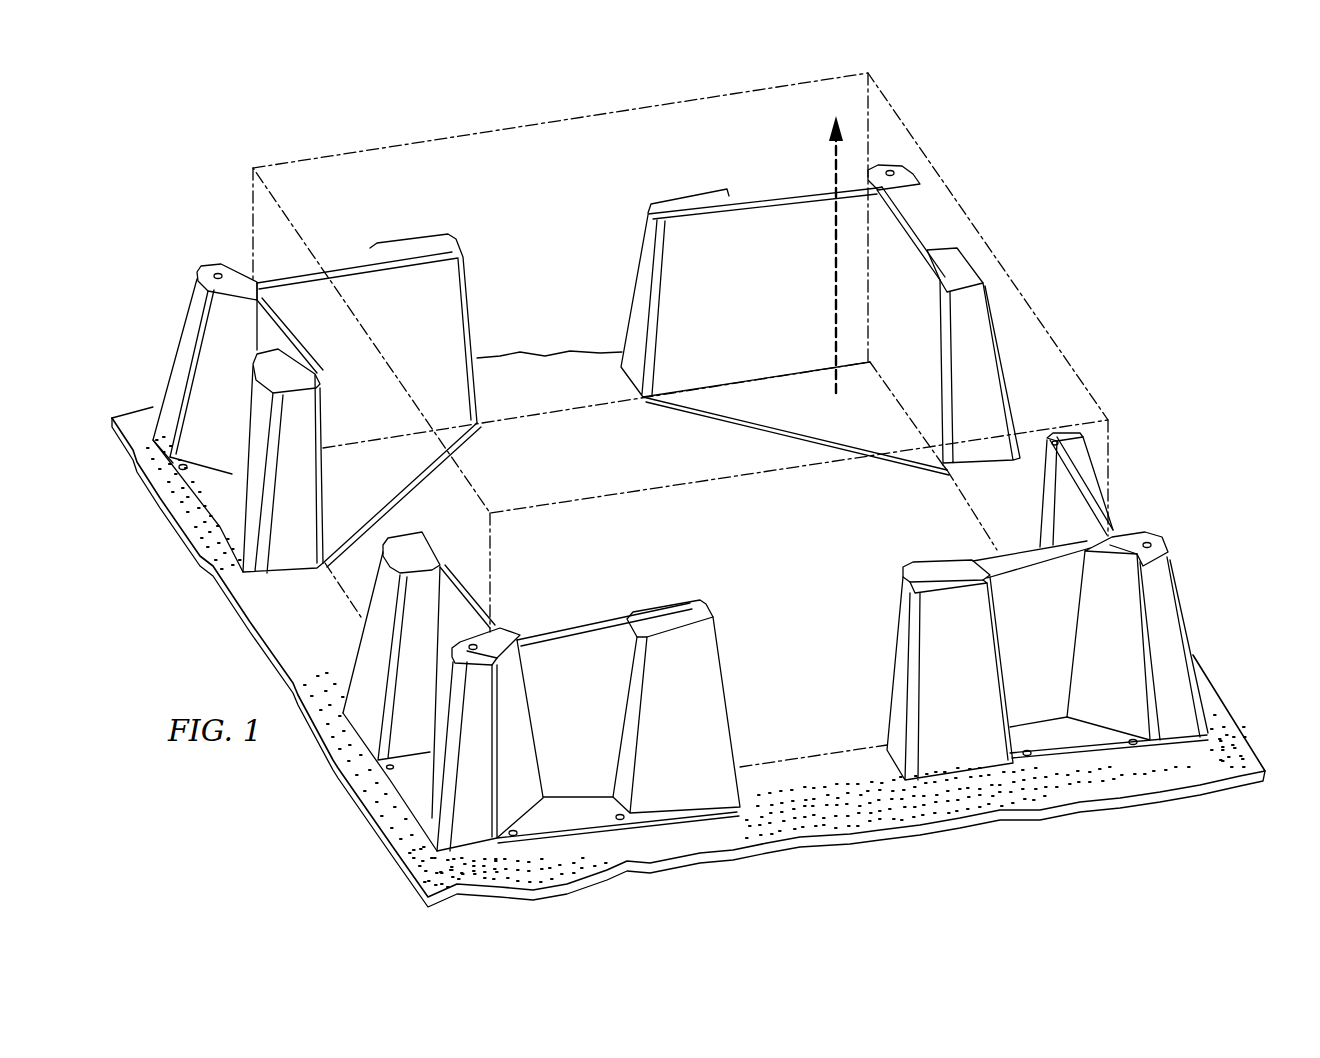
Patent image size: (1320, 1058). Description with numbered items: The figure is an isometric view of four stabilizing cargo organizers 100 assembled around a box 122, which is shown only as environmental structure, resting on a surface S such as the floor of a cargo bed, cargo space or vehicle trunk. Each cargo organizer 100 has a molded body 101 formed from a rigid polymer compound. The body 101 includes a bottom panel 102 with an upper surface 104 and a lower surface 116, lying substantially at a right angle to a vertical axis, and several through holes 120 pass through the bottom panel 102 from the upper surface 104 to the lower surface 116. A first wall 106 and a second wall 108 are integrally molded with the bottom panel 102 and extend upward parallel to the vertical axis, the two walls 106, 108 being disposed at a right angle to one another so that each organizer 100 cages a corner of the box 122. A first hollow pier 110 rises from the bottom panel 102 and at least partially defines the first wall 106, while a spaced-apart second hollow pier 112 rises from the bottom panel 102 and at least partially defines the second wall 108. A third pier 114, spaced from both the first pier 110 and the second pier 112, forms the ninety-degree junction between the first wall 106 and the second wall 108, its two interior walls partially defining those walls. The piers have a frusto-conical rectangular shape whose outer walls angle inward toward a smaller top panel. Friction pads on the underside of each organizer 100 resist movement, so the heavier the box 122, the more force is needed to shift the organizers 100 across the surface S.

The stabilizing cargo organizer 100 is at (709, 491).
The body 101 is at (890, 238).
The bottom panel 102 is at (856, 437).
The upper surface 104 is at (765, 614).
The first wall 106 is at (775, 300).
The second wall 108 is at (888, 318).
The first hollow pier 110 is at (632, 281).
The second hollow pier 112 is at (972, 368).
The third pier 114 is at (480, 718).
The lower surface 116 is at (735, 398).
The through holes 120 is at (527, 828).
The box 122 is at (405, 141).
The surface S is at (850, 818).